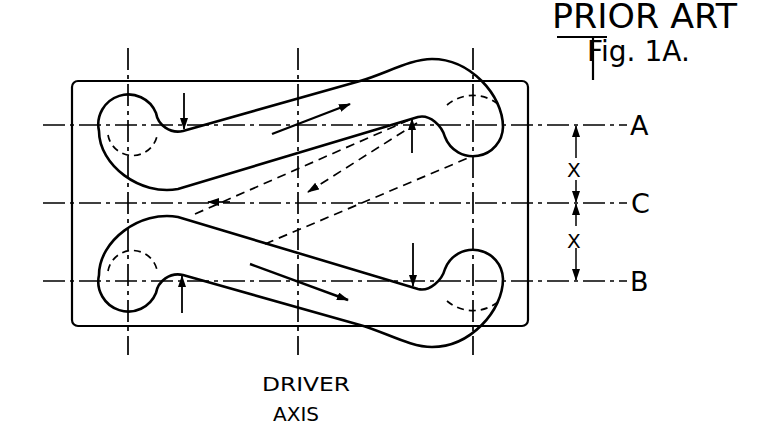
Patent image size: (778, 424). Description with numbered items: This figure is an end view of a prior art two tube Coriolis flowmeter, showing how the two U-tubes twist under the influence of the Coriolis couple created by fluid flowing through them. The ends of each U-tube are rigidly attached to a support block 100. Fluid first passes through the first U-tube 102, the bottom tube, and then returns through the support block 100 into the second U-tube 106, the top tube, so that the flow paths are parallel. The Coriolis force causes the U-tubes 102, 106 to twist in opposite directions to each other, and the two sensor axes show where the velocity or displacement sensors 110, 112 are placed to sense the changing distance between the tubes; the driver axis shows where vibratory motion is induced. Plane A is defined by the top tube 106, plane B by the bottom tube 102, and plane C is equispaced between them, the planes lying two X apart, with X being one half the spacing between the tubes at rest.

The support block 100 is at (85, 80).
The second U-tube 106 is at (427, 59).
The first U-tube 102 is at (412, 337).
The displacement sensor 112 is at (137, 236).
The displacement sensor 110 is at (505, 236).